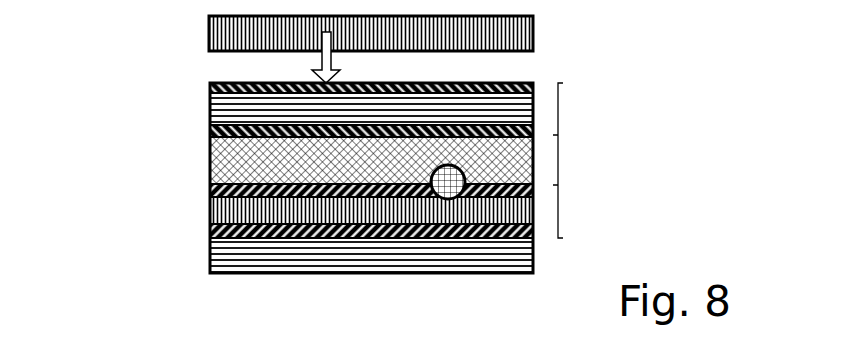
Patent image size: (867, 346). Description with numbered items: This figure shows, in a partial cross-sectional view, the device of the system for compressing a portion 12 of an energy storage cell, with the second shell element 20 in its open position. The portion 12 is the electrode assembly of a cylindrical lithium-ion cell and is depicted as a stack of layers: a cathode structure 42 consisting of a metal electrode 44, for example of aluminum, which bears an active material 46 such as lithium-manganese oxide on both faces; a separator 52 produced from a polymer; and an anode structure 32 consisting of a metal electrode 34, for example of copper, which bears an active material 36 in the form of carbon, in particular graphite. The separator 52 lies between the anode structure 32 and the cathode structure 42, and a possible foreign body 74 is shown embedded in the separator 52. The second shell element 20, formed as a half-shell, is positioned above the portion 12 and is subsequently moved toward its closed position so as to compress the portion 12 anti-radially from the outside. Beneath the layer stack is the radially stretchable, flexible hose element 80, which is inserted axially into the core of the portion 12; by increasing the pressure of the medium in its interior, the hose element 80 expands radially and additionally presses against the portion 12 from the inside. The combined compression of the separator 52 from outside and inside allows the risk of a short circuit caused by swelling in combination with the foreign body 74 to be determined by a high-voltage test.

The portion of an energy storage cell 12 is at (386, 194).
The second shell element 20 is at (535, 26).
The anode structure 32 is at (327, 213).
The metal electrode 34 is at (210, 213).
The active material 36 is at (210, 190).
The cathode structure 42 is at (327, 108).
The metal electrode 44 is at (210, 112).
The active material 46 is at (210, 88).
The separator 52 is at (558, 162).
The foreign body 74 is at (450, 190).
The hose element 80 is at (210, 263).